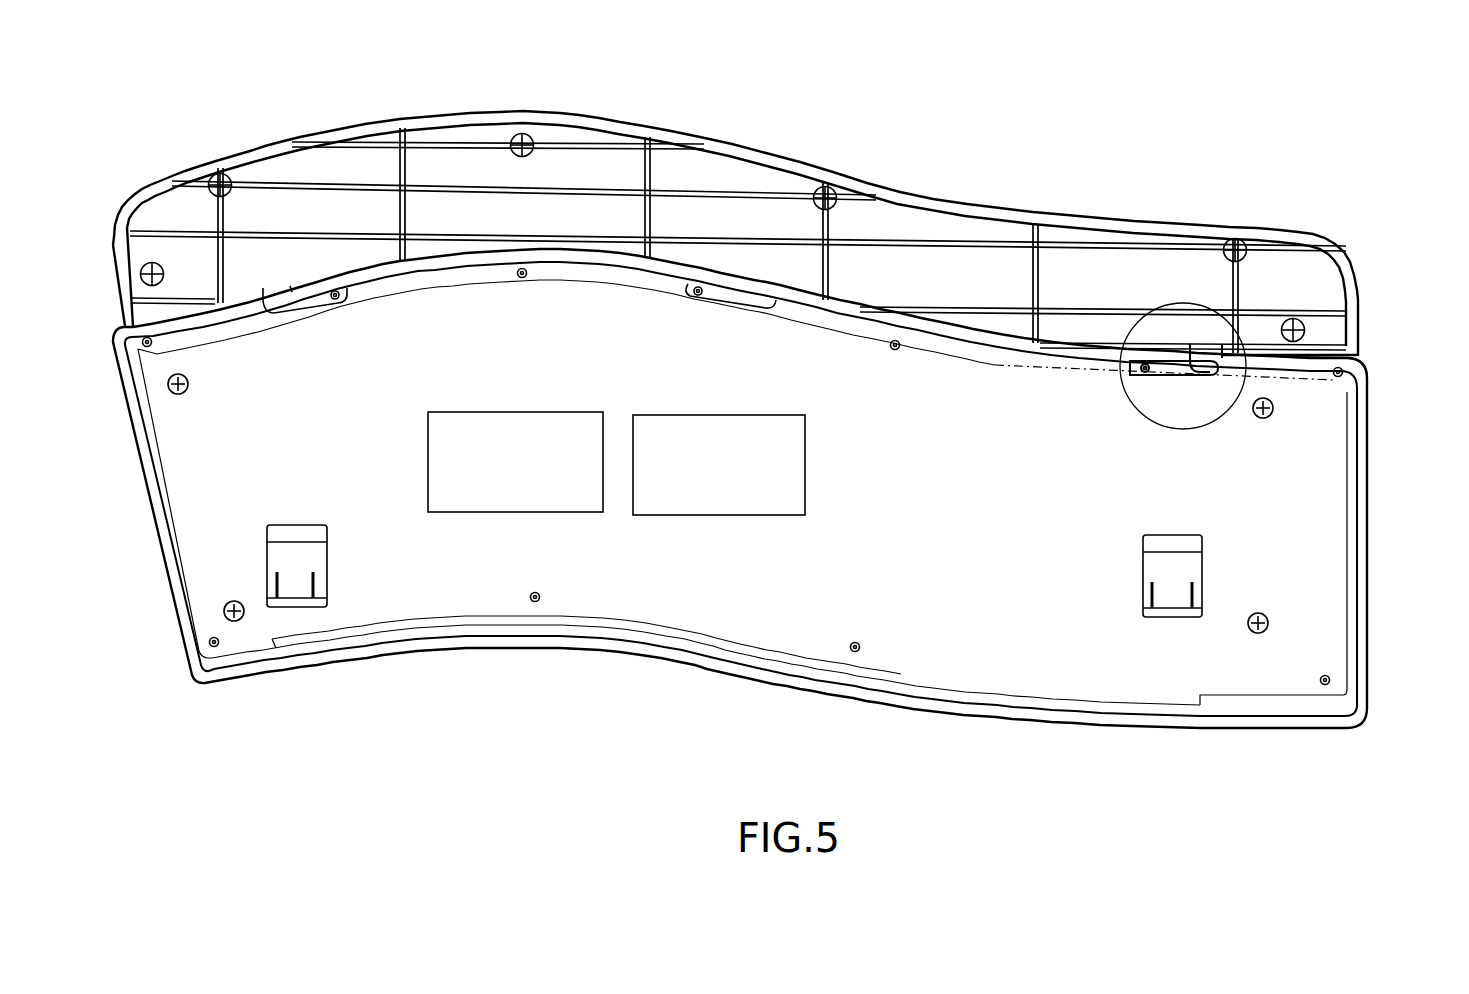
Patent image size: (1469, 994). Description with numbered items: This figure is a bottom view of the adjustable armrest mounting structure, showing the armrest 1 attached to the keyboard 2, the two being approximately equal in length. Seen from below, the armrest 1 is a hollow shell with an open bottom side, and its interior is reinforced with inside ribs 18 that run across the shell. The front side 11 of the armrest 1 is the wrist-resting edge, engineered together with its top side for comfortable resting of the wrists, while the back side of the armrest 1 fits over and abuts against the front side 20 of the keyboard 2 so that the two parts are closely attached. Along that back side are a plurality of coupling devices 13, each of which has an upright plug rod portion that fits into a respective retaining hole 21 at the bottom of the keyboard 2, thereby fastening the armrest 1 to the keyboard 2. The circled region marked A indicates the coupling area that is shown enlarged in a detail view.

The armrest 1 is at (1196, 262).
The keyboard 2 is at (1035, 633).
The front side 11 is at (1318, 352).
The coupling devices 13 is at (1197, 400).
The inside ribs 18 is at (580, 190).
The front side 20 is at (1322, 360).
The retaining holes 21 is at (1133, 372).
The detail area A is at (1147, 310).